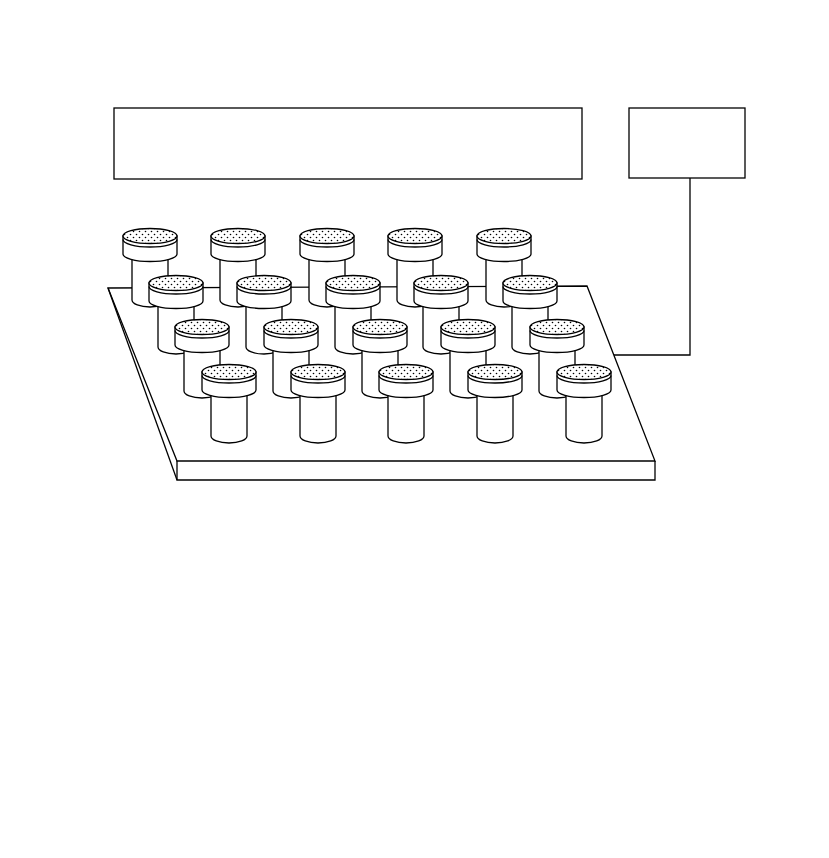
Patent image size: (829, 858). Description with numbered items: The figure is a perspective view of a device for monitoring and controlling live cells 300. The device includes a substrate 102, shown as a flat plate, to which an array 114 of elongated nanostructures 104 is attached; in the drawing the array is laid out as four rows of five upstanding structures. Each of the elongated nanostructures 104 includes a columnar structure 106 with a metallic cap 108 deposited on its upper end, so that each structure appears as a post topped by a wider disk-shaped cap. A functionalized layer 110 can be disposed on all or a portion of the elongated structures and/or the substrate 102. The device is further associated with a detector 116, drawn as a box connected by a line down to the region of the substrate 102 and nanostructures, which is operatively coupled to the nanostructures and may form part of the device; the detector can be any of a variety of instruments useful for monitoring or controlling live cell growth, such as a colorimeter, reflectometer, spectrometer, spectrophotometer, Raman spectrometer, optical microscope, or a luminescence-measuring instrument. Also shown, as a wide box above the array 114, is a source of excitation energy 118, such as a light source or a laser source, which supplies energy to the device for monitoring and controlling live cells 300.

The device for monitoring and controlling live cells 300 is at (39, 29).
The substrate 102 is at (263, 470).
The elongated nanostructures 104 is at (118, 242).
The columnar structures 106 is at (232, 428).
The metallic caps 108 is at (220, 386).
The functionalized layer 110 is at (616, 371).
The array 114 is at (322, 340).
The detector 116 is at (665, 155).
The source of excitation energy 118 is at (330, 155).